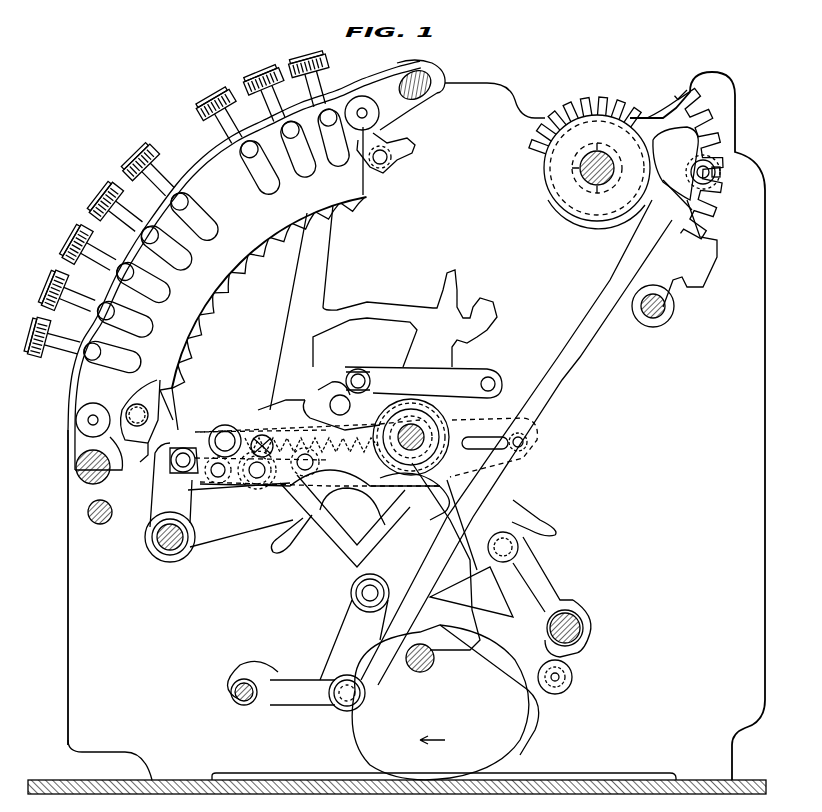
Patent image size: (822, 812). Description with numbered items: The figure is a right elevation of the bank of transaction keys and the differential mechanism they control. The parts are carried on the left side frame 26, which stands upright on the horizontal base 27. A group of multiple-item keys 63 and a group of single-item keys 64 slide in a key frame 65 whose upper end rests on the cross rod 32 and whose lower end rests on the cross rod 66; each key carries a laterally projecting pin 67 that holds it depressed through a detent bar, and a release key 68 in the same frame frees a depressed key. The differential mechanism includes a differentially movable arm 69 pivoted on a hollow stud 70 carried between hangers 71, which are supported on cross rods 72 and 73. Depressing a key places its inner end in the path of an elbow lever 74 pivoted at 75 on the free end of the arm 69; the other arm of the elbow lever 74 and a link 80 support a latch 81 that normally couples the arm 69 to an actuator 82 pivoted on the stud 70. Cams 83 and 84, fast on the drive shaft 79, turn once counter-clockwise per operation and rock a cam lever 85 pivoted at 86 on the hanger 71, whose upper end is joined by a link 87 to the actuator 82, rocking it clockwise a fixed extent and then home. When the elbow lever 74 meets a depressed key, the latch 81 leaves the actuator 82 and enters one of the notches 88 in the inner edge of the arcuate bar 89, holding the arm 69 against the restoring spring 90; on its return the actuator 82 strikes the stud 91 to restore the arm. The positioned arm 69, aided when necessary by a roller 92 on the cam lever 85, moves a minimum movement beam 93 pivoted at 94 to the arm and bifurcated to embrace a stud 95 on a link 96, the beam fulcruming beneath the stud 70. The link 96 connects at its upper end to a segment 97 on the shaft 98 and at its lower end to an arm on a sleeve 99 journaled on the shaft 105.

The left side frame 26 is at (487, 82).
The horizontal base 27 is at (70, 786).
The cross rod 32 is at (428, 76).
The multiple-item keys 63 is at (306, 60).
The single-item keys 64 is at (103, 172).
The key frame 65 is at (345, 100).
The cross rod 66 is at (103, 478).
The laterally projecting pin 67 is at (186, 203).
The release key 68 is at (214, 96).
The differentially movable arm 69 is at (318, 396).
The hollow stud 70 is at (414, 430).
The hanger 71 is at (397, 306).
The cross rod 72 is at (578, 627).
The cross rod 73 is at (166, 550).
The elbow lever 74 is at (212, 446).
The pivot 75 is at (218, 476).
The drive shaft 79 is at (432, 666).
The link 80 is at (261, 430).
The latch 81 is at (245, 430).
The actuator 82 is at (340, 548).
The cam 83 is at (498, 748).
The cam 84 is at (540, 700).
The cam lever 85 is at (505, 592).
The pivot 86 is at (512, 547).
The link 87 is at (457, 378).
The notches 88 is at (205, 310).
The arcuate bar 89 is at (243, 258).
The restoring spring 90 is at (345, 460).
The laterally projecting stud 91 is at (322, 388).
The roller 92 is at (358, 594).
The minimum movement beam 93 is at (362, 482).
The pivot 94 is at (286, 474).
The stud 95 is at (530, 440).
The link 96 is at (568, 364).
The segment 97 is at (690, 98).
The shaft 98 is at (582, 172).
The sleeve 99 is at (258, 664).
The shaft 105 is at (245, 706).